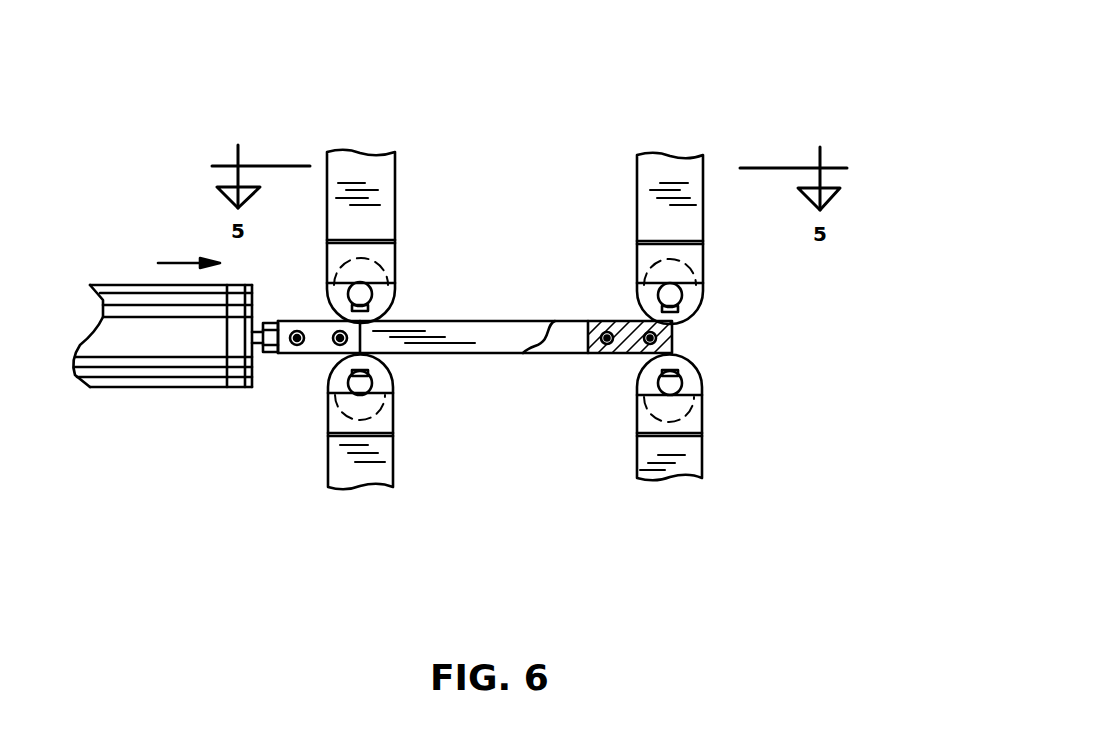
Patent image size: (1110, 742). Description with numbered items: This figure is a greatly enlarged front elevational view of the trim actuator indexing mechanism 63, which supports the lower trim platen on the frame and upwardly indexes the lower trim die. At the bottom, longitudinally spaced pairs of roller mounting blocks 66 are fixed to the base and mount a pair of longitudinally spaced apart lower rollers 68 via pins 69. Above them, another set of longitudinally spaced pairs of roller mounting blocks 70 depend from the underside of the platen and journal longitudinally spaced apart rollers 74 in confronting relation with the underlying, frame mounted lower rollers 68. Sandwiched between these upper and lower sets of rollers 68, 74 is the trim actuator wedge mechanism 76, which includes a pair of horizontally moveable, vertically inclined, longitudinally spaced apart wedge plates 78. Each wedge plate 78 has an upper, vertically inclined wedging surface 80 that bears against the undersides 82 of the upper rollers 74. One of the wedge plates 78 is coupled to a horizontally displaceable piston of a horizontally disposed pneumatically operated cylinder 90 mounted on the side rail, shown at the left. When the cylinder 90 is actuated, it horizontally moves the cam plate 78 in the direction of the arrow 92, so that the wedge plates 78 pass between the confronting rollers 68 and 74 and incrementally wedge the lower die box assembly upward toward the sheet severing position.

The trim actuator indexing mechanism 63 is at (147, 488).
The roller mounting blocks 66 is at (388, 472).
The lower rollers 68 is at (390, 372).
The pins 69 is at (343, 387).
The roller mounting blocks 70 is at (352, 163).
The rollers 74 is at (702, 307).
The trim actuator wedge mechanism 76 is at (668, 283).
The wedge plates 78 is at (587, 330).
The wedging surfaces 80 is at (643, 332).
The undersides of the upper rollers 82 is at (672, 325).
The pneumatically operated cylinder 90 is at (143, 285).
The arrow 92 is at (175, 263).